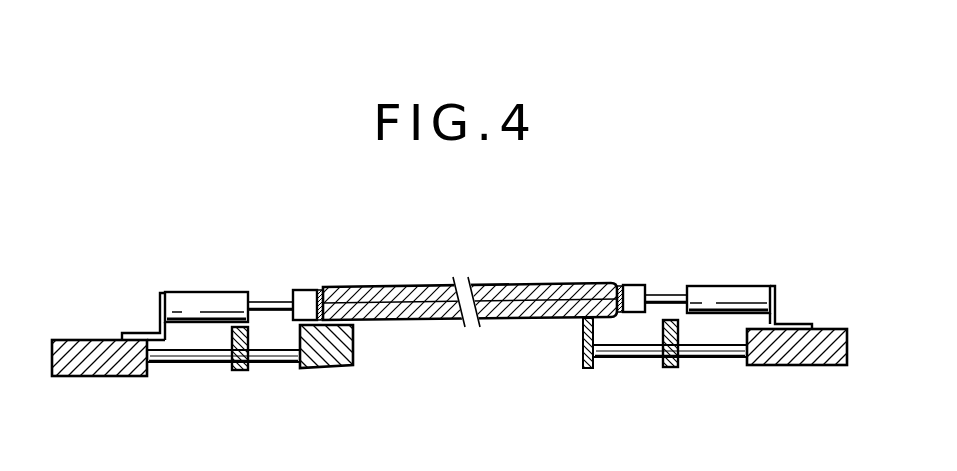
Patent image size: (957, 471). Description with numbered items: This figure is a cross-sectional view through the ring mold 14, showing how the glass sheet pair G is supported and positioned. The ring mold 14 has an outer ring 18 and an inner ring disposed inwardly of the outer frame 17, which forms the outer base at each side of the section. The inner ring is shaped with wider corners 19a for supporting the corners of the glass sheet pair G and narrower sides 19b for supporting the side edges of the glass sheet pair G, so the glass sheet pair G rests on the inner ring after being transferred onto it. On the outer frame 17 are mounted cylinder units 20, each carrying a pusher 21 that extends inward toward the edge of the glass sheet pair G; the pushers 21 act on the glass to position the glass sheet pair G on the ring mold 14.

The ring mold 14 is at (630, 362).
The outer frame 17 is at (110, 377).
The outer ring 18 is at (240, 371).
The wider corners 19a is at (333, 368).
The narrower sides 19b is at (583, 368).
The cylinder units 20 is at (205, 291).
The pushers 21 is at (308, 290).
The glass sheet pair G is at (495, 268).